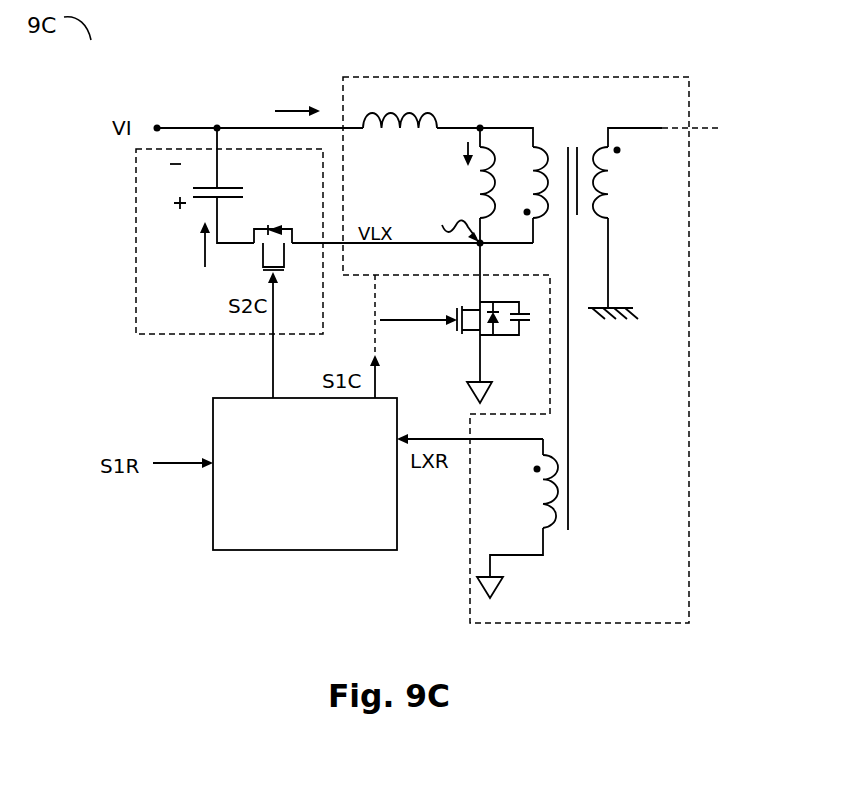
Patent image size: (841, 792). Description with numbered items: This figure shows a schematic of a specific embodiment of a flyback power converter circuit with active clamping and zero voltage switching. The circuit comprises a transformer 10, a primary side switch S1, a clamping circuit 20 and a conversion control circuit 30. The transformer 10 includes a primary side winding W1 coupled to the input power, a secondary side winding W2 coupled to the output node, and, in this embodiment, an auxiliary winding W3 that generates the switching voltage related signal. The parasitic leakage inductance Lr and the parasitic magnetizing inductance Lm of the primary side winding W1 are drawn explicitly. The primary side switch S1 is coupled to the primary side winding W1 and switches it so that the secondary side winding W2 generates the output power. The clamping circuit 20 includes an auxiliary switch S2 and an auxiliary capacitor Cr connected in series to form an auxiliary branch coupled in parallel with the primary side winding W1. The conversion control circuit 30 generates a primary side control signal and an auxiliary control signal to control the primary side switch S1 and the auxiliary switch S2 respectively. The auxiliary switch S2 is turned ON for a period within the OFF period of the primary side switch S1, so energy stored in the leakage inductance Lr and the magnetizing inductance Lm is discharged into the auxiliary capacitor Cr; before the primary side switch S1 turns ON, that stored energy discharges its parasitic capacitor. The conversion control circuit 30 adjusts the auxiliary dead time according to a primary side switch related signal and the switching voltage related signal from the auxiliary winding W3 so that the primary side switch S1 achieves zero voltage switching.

The transformer 10 is at (662, 610).
The clamping circuit 20 is at (180, 318).
The conversion control circuit 30 is at (289, 538).
The auxiliary capacitor Cr is at (228, 177).
The auxiliary switch S2 is at (287, 254).
The parasitic leakage inductance Lr is at (400, 106).
The parasitic magnetizing inductance Lm is at (467, 182).
The primary side winding W1 is at (535, 209).
The secondary side winding W2 is at (625, 223).
The auxiliary winding W3 is at (517, 518).
The primary side switch S1 is at (487, 323).